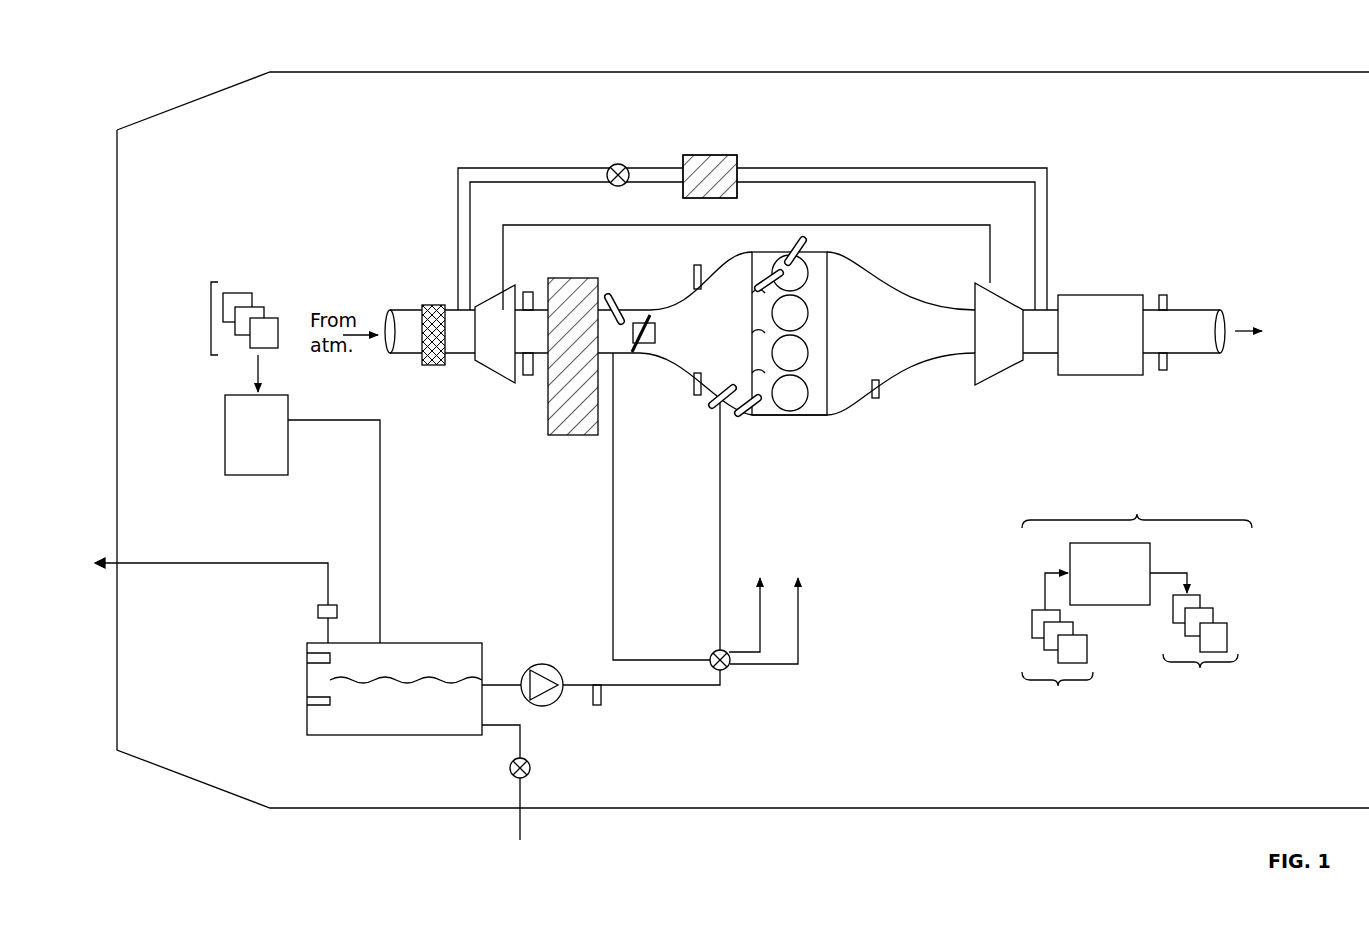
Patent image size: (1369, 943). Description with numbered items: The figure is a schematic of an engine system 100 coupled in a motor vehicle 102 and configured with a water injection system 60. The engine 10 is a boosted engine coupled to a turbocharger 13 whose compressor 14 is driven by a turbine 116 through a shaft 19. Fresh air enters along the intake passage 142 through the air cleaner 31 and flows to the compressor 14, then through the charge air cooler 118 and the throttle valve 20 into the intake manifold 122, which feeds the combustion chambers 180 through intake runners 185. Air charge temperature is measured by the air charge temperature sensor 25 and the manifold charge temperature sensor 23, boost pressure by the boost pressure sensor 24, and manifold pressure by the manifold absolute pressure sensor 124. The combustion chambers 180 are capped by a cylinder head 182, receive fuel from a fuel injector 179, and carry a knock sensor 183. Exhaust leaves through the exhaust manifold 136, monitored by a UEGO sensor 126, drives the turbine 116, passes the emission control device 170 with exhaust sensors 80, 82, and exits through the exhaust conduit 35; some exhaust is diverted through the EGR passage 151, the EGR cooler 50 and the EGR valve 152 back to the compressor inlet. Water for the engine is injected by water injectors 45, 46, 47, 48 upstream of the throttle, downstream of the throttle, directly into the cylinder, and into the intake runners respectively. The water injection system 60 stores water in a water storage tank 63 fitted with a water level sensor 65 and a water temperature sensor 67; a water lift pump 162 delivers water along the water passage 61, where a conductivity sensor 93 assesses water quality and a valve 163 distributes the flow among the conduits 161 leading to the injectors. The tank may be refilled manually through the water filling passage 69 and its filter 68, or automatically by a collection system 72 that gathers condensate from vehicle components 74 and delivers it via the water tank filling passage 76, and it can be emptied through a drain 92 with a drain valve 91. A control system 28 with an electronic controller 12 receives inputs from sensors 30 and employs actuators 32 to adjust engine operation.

The motor vehicle 102 is at (757, 72).
The engine system 100 is at (1133, 127).
The engine 10 is at (768, 238).
The controller 12 is at (1110, 574).
The turbocharger 13 is at (540, 218).
The compressor 14 is at (495, 334).
The shaft 19 is at (907, 228).
The throttle valve 20 is at (655, 334).
The manifold charge temperature sensor 23 is at (696, 272).
The boost pressure sensor 24 is at (528, 375).
The air charge temperature sensor 25 is at (528, 292).
The control system 28 is at (1137, 496).
The sensors 30 is at (1062, 650).
The air cleaner 31 is at (431, 305).
The actuators 32 is at (1203, 642).
The exhaust conduit 35 is at (1205, 312).
The water injector 45 is at (611, 298).
The water injector 46 is at (712, 406).
The water injector 47 is at (758, 292).
The water injector 48 is at (742, 418).
The EGR cooler 50 is at (722, 156).
The water injection system 60 is at (394, 768).
The water passage 61 is at (660, 686).
The water storage tank 63 is at (450, 643).
The water level sensor 65 is at (307, 660).
The water temperature sensor 67 is at (307, 702).
The filter 68 is at (337, 612).
The water filling passage 69 is at (246, 562).
The collection system 72 is at (256, 435).
The vehicle components 74 is at (210, 318).
The water tank filling passage 76 is at (380, 526).
The exhaust sensor 80 is at (1164, 295).
The exhaust sensor 82 is at (1164, 370).
The drain valve 91 is at (530, 768).
The drain 92 is at (521, 742).
The conductivity sensor 93 is at (598, 706).
The turbine 116 is at (999, 334).
The charge air cooler 118 is at (568, 280).
The intake manifold 122 is at (675, 333).
The manifold absolute pressure sensor 124 is at (696, 383).
The UEGO sensor 126 is at (876, 390).
The exhaust manifold 136 is at (901, 333).
The intake passage 142 is at (408, 355).
The EGR passage 151 is at (820, 170).
The EGR valve 152 is at (627, 167).
The conduits 161 is at (614, 546).
The water lift pump 162 is at (560, 672).
The valve 163 is at (728, 668).
The emission control device 170 is at (1093, 295).
The fuel injector 179 is at (804, 240).
The combustion chamber 180 is at (809, 267).
The cylinder head 182 is at (828, 334).
The knock sensor 183 is at (819, 415).
The intake runners 185 is at (764, 270).